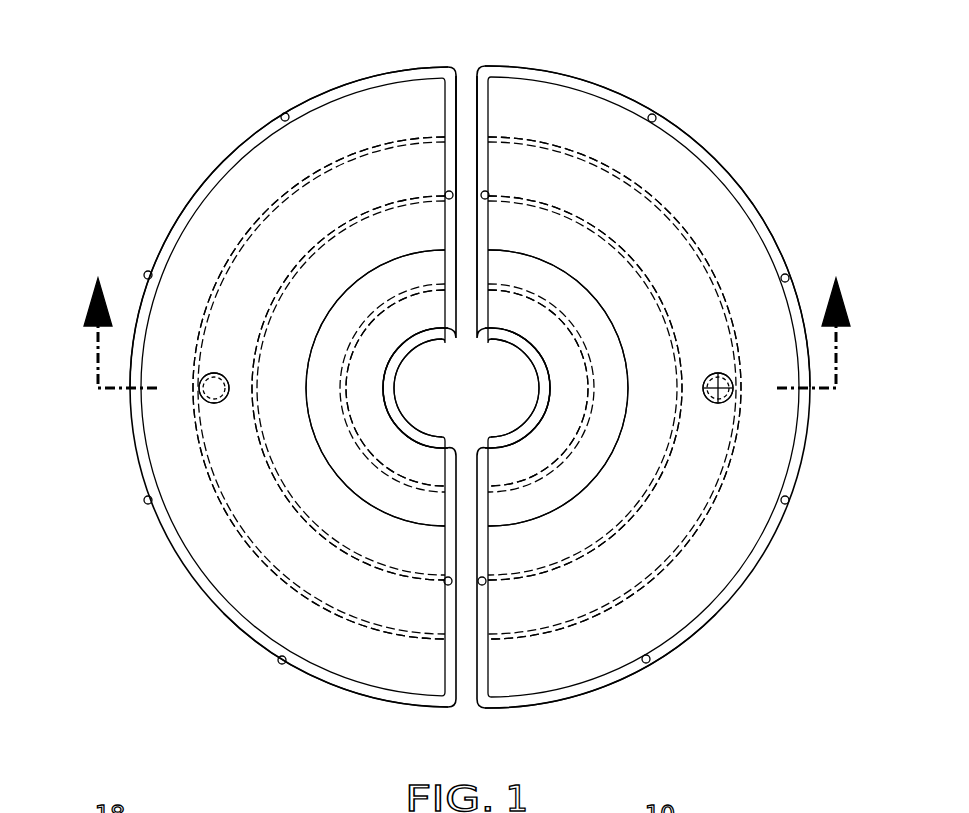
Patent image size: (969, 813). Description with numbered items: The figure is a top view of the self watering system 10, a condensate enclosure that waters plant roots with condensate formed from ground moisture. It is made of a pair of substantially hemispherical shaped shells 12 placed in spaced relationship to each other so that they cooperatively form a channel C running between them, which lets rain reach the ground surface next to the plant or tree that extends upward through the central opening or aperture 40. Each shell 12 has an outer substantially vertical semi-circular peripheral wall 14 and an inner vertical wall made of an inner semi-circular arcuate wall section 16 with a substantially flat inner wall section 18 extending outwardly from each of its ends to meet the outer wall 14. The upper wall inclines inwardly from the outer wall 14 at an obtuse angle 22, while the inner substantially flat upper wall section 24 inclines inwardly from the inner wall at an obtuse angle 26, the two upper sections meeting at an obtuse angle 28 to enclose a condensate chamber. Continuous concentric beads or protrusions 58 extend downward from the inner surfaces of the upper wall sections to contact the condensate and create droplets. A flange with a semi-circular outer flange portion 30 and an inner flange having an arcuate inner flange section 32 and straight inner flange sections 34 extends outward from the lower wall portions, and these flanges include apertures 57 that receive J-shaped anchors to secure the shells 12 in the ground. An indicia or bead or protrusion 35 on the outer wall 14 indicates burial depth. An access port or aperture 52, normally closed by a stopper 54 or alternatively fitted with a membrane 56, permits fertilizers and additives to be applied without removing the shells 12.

The self watering system 10 is at (463, 401).
The hemispherical shaped shell 12 is at (185, 162).
The outer substantially vertical semi-circular peripheral wall 14 is at (290, 650).
The inner semi-circular arcuate wall section 16 is at (422, 452).
The flat inner wall section 18 is at (444, 268).
The obtuse angle 22 is at (226, 168).
The inner substantially flat upper wall section 24 is at (372, 492).
The obtuse angle 26 is at (397, 347).
The obtuse angle 28 is at (313, 340).
The semi-circular outer flange portion 30 is at (228, 618).
The semi-circular inner flange section 32 is at (390, 407).
The straight inner flange section 34 is at (445, 140).
The indicia or bead or protrusion 35 is at (760, 215).
The central opening or aperture 40 is at (491, 391).
The access port or aperture 52 is at (192, 405).
The stopper 54 is at (204, 377).
The membrane 56 is at (728, 377).
The aperture 57 is at (281, 116).
The continuous concentric beads or protrusions 58 is at (363, 455).
The channel C is at (467, 125).